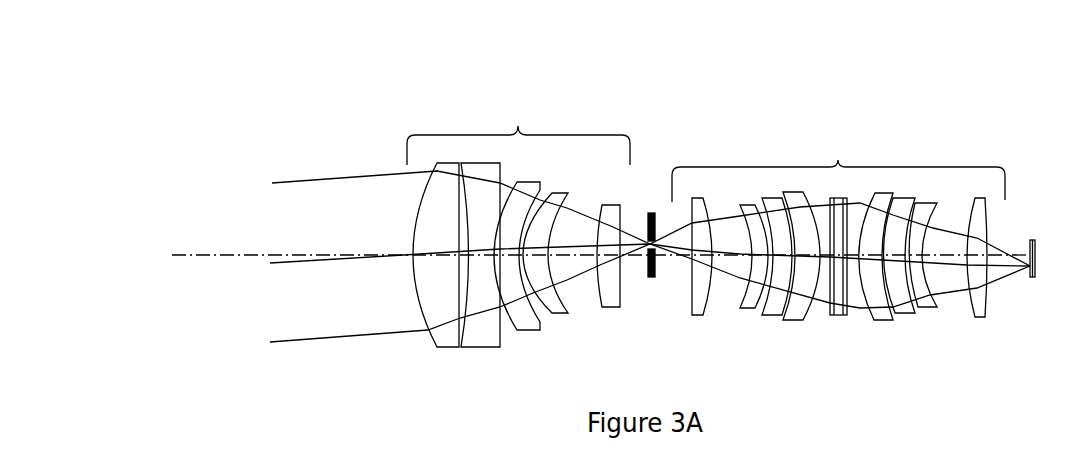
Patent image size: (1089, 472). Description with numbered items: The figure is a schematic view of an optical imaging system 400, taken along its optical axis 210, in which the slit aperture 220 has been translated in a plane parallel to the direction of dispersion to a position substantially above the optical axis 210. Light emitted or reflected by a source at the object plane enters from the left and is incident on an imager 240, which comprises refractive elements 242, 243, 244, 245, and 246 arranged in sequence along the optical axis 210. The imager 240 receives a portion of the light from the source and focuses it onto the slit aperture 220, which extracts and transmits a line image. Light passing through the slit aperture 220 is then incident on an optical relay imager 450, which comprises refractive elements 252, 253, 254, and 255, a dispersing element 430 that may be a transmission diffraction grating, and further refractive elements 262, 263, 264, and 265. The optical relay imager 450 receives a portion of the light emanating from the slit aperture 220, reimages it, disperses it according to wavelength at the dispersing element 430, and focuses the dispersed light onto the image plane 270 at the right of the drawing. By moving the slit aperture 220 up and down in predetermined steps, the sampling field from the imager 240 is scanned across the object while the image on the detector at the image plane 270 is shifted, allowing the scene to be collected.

The optical imaging system 400 is at (236, 131).
The optical axis 210 is at (212, 257).
The slit aperture 220 is at (652, 286).
The imager 240 is at (518, 125).
The refractive element 242 is at (450, 348).
The refractive element 243 is at (480, 348).
The refractive element 244 is at (527, 331).
The refractive element 245 is at (557, 318).
The refractive element 246 is at (606, 308).
The optical relay imager 450 is at (838, 160).
The refractive element 252 is at (695, 316).
The refractive element 253 is at (747, 310).
The refractive element 254 is at (770, 316).
The refractive element 255 is at (793, 321).
The dispersing element 430 is at (838, 316).
The refractive element 262 is at (885, 321).
The refractive element 263 is at (908, 314).
The refractive element 264 is at (928, 308).
The refractive element 265 is at (980, 318).
The image plane 270 is at (1037, 245).